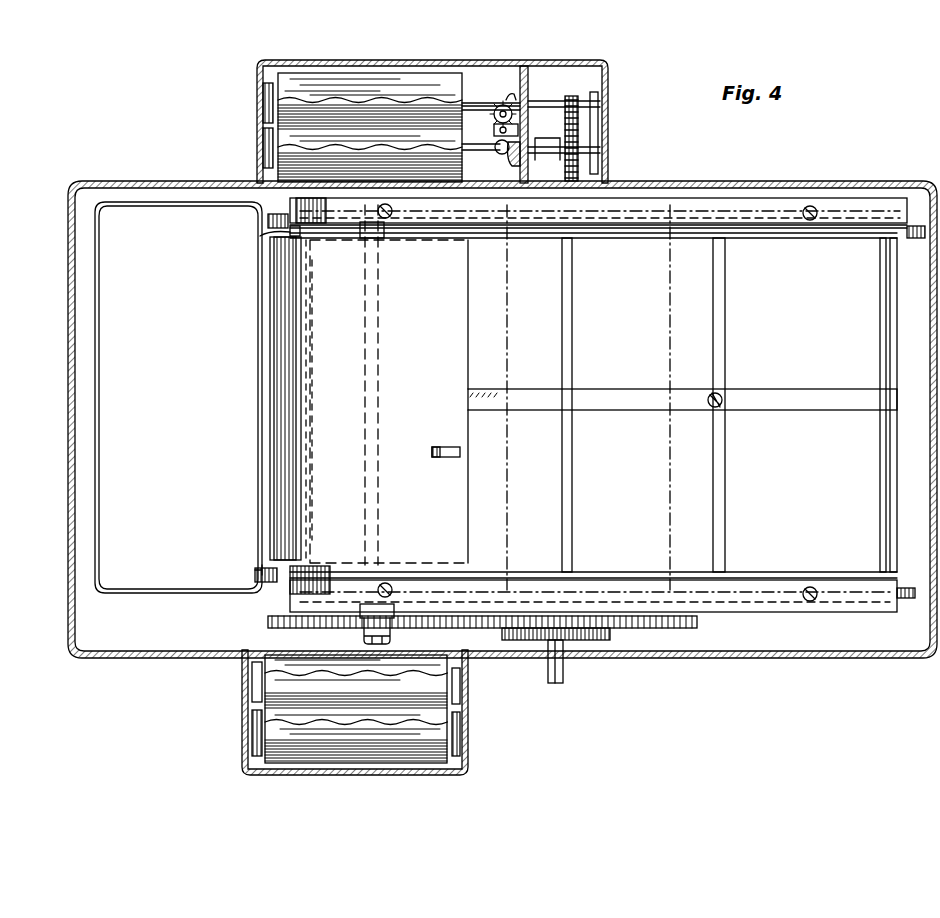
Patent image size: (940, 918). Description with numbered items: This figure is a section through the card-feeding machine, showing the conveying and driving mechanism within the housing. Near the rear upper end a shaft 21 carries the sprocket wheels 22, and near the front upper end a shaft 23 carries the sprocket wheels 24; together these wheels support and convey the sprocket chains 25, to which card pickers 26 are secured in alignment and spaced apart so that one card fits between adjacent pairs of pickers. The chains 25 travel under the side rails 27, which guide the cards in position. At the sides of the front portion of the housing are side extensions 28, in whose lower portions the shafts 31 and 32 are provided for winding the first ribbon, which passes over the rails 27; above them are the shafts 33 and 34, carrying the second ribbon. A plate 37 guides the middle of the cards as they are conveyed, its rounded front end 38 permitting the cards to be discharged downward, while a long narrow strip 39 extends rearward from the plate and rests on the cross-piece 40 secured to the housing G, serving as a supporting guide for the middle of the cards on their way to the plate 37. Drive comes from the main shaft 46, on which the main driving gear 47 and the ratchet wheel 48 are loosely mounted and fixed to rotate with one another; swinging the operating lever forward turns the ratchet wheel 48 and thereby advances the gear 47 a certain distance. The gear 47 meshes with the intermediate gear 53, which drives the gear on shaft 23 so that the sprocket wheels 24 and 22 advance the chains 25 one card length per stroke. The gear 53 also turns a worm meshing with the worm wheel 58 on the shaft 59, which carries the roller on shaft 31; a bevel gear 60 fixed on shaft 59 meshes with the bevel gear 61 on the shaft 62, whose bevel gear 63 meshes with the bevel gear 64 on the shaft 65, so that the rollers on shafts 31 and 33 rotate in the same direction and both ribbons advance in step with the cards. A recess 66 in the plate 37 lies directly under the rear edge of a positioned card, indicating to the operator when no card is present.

The shaft 21 is at (882, 274).
The sprocket wheels 22 is at (921, 240).
The shaft 23 is at (261, 236).
The sprocket wheels 24 is at (288, 218).
The sprocket chains 25 is at (268, 221).
The card pickers 26 is at (258, 568).
The side rails 27 is at (862, 212).
The side extensions 28 is at (247, 95).
The shaft 31 is at (265, 152).
The shaft 32 is at (256, 676).
The shaft 33 is at (325, 80).
The shaft 34 is at (252, 730).
The plate 37 is at (389, 385).
The front end 38 is at (283, 398).
The strip 39 is at (812, 384).
The cross-piece 40 is at (720, 311).
The main shaft 46 is at (564, 678).
The main driving gear 47 is at (698, 624).
The ratchet wheel 48 is at (612, 636).
The intermediate gear 53 is at (402, 624).
The worm wheel 58 is at (572, 130).
The shaft 59 is at (538, 155).
The bevel gear 60 is at (514, 166).
The bevel gear 61 is at (498, 155).
The shaft 62 is at (497, 150).
The bevel gear 63 is at (494, 128).
The bevel gear 64 is at (499, 103).
The shaft 65 is at (506, 100).
The recess 66 is at (436, 458).
The housing G is at (770, 616).